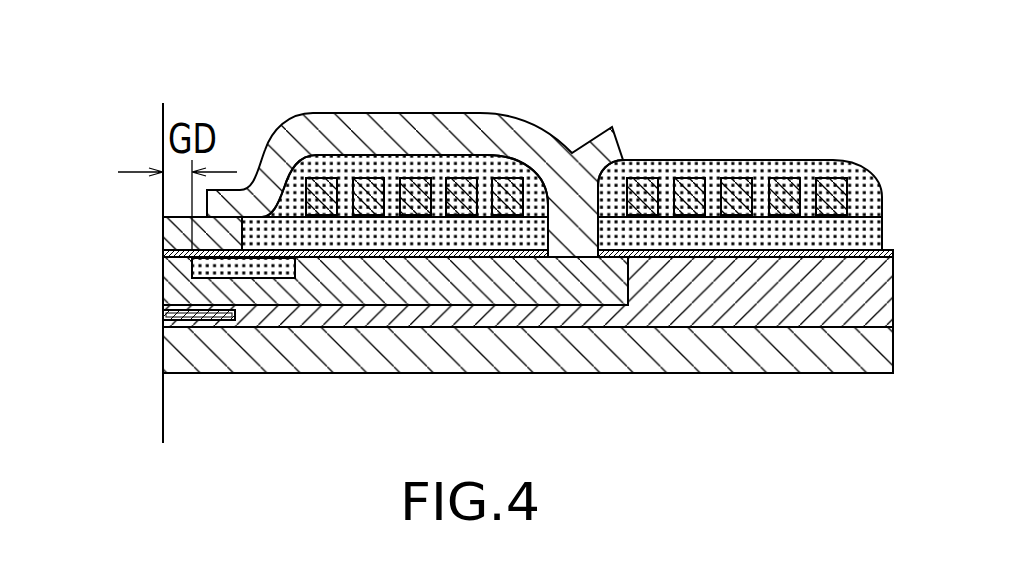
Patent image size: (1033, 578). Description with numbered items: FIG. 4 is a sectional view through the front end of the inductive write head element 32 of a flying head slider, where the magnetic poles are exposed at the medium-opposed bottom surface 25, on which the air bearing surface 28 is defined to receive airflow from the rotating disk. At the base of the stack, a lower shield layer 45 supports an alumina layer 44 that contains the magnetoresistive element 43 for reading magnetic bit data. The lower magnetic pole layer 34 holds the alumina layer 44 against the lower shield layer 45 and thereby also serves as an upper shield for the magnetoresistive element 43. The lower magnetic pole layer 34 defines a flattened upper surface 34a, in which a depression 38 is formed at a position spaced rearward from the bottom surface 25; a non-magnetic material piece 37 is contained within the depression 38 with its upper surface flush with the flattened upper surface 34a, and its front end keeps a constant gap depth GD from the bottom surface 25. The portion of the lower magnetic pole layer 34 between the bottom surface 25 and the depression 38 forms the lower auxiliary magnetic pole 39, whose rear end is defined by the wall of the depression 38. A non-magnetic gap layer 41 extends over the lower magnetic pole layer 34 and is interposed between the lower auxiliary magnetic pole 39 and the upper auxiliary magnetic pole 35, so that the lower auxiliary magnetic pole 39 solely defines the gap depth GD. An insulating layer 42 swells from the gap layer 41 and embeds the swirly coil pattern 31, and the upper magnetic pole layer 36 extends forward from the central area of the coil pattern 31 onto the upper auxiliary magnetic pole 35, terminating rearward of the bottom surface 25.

The bottom surface 25 is at (163, 432).
The air bearing surface 28 is at (163, 124).
The swirly coil pattern 31 is at (366, 180).
The inductive write head element 32 is at (776, 82).
The lower magnetic pole layer 34 is at (307, 305).
The flattened upper surface 34a is at (334, 254).
The upper auxiliary magnetic pole 35 is at (163, 218).
The upper magnetic pole layer 36 is at (292, 122).
The non-magnetic material piece 37 is at (243, 278).
The depression 38 is at (195, 266).
The lower auxiliary magnetic pole 39 is at (172, 272).
The non-magnetic gap layer 41 is at (163, 255).
The insulating layer 42 is at (512, 163).
The magnetoresistive element 43 is at (163, 315).
The alumina layer 44 is at (665, 324).
The lower shield layer 45 is at (488, 374).